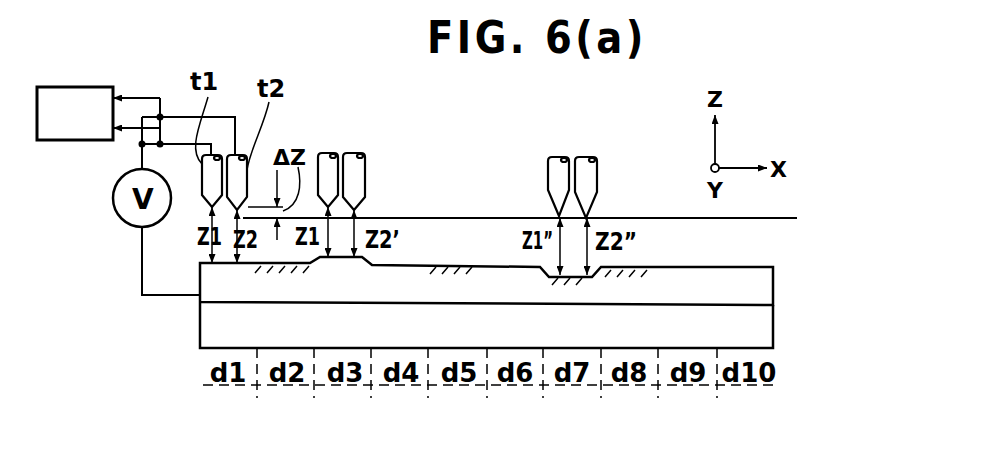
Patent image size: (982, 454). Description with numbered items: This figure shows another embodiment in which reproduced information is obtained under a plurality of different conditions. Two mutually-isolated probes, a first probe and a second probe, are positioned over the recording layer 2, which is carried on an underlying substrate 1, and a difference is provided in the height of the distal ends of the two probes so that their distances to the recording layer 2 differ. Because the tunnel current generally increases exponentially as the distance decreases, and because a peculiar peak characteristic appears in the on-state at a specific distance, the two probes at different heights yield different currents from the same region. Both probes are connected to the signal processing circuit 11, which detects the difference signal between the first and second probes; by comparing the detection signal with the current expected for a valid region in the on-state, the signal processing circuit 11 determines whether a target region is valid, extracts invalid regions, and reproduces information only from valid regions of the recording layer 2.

The substrate 1 is at (200, 335).
The recording layer 2 is at (200, 298).
The signal processing circuit 11 is at (72, 132).